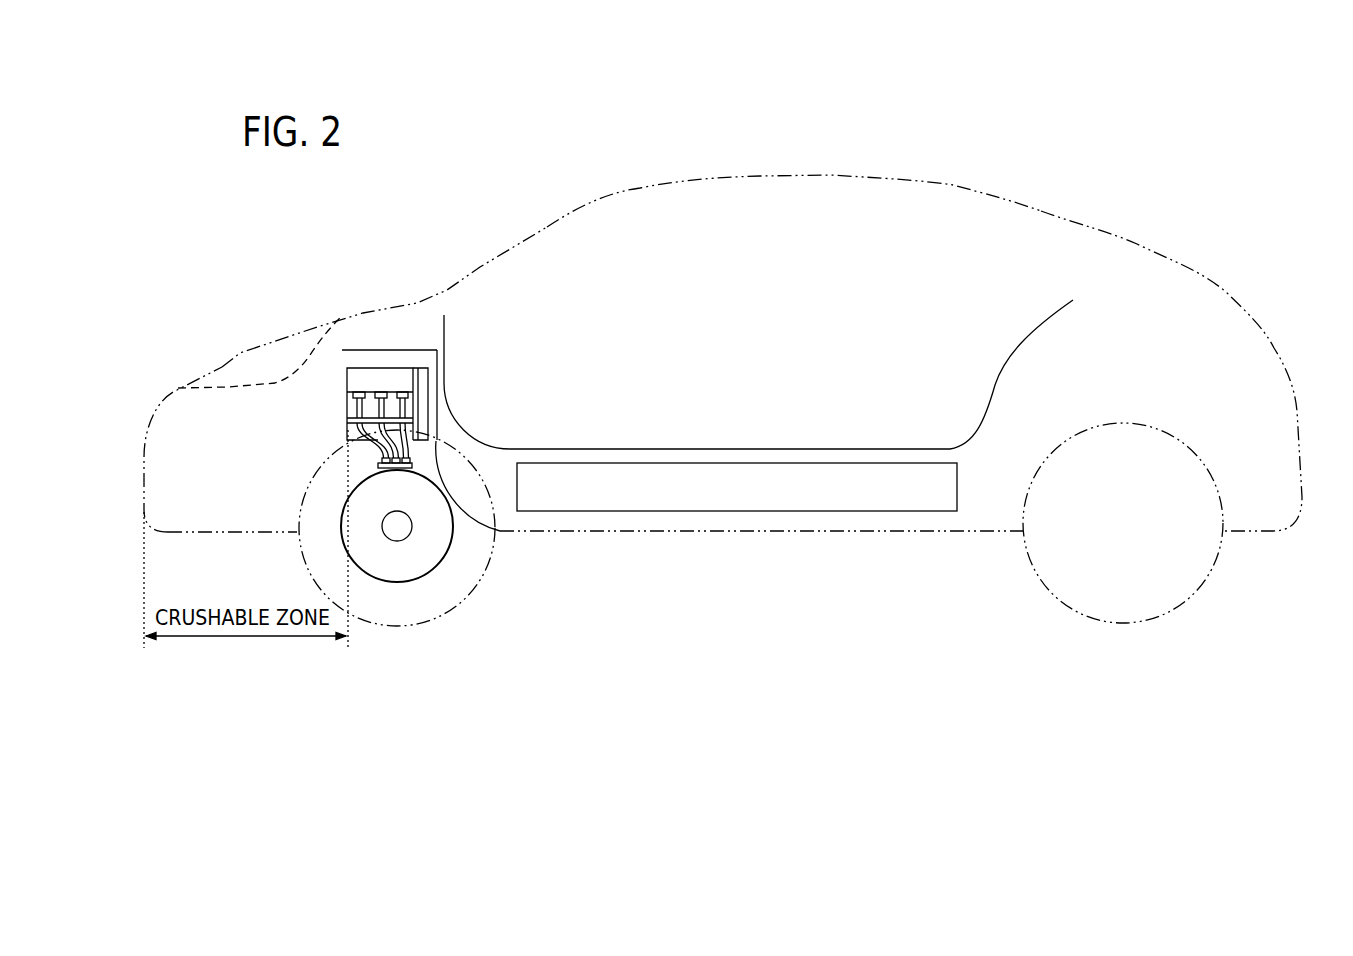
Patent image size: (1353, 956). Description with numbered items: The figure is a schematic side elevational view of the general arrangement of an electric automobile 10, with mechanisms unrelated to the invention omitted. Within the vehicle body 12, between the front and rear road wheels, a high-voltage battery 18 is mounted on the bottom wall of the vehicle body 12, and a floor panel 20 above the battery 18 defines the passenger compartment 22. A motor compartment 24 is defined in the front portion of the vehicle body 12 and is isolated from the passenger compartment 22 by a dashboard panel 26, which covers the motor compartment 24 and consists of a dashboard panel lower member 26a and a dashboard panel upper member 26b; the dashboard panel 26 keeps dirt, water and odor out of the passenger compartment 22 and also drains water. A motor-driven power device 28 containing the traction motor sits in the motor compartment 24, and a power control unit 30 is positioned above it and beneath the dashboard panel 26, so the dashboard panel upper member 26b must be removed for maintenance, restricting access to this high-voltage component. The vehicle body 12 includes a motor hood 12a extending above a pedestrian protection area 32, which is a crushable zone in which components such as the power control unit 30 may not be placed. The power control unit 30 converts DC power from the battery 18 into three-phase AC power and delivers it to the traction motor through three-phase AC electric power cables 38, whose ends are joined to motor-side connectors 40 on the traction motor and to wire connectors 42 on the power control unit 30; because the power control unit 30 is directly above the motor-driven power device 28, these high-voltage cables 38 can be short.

The electric automobile 10 is at (443, 197).
The vehicle body 12 is at (580, 212).
The motor hood 12a is at (240, 353).
The battery 18 is at (688, 500).
The floor panel 20 is at (614, 448).
The passenger compartment 22 is at (888, 200).
The motor compartment 24 is at (422, 460).
The dashboard panel 26 is at (438, 408).
The dashboard panel lower member 26a is at (440, 372).
The dashboard panel upper member 26b is at (403, 350).
The motor-driven power device 28 is at (397, 584).
The power control unit 30 is at (368, 377).
The pedestrian protection area 32 is at (220, 370).
The three-phase AC electric power cables 38 is at (372, 433).
The motor-side connectors 40 is at (380, 460).
The wire connectors 42 is at (355, 394).